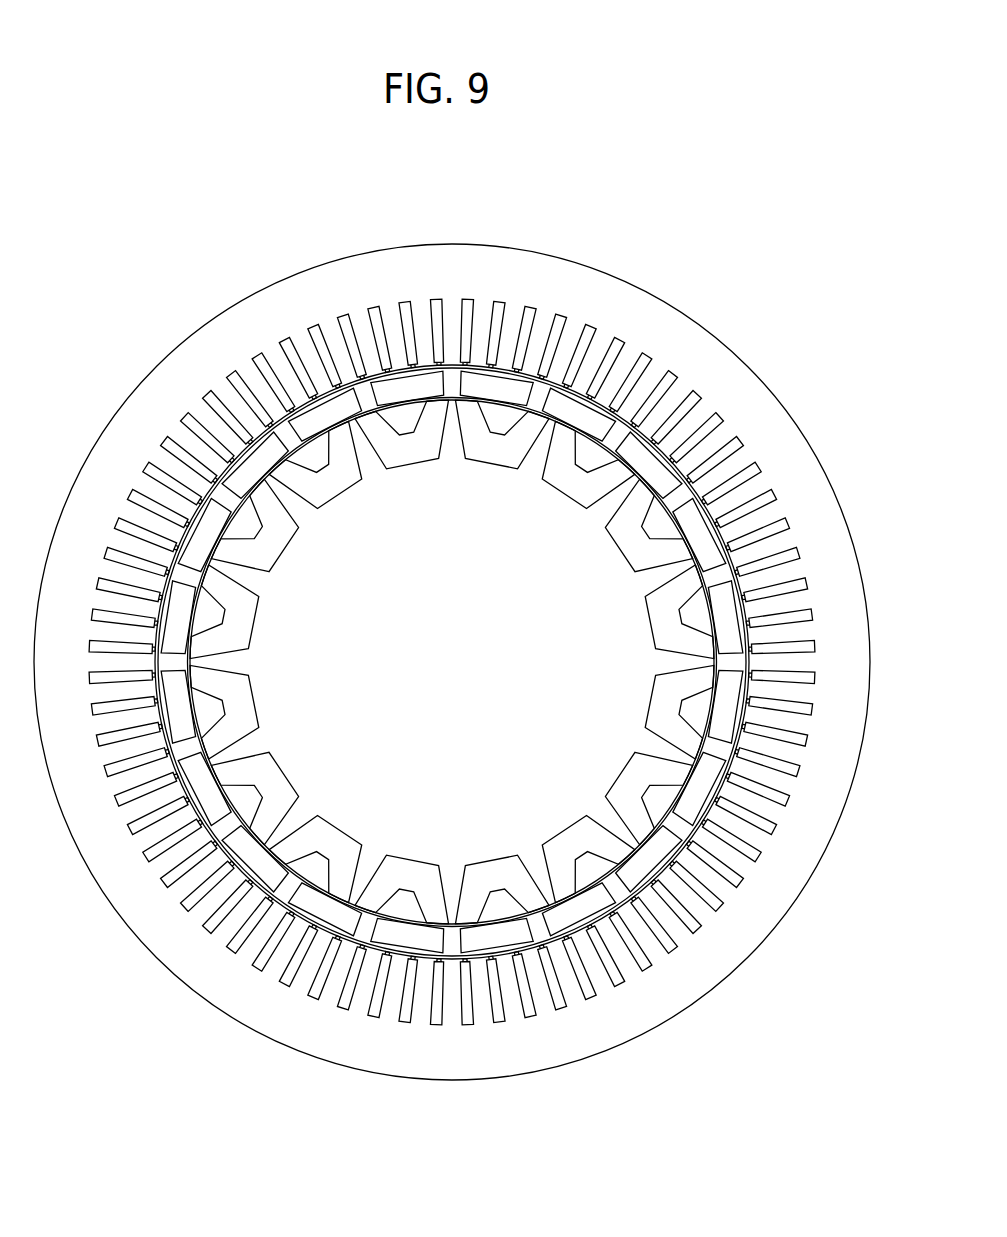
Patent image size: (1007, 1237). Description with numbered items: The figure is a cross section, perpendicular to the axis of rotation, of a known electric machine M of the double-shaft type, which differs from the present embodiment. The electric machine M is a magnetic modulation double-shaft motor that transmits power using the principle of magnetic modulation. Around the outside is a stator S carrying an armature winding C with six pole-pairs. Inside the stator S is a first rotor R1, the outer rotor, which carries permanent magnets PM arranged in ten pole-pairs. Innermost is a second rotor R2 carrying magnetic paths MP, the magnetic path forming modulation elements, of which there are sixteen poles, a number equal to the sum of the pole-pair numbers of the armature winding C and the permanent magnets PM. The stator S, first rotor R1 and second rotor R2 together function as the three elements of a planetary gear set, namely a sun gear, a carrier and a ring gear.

The electric machine M is at (607, 196).
The stator S is at (491, 272).
The armature winding C is at (584, 353).
The first rotor R1 is at (359, 391).
The permanent magnets PM is at (266, 433).
The second rotor R2 is at (387, 487).
The magnetic paths MP is at (491, 449).